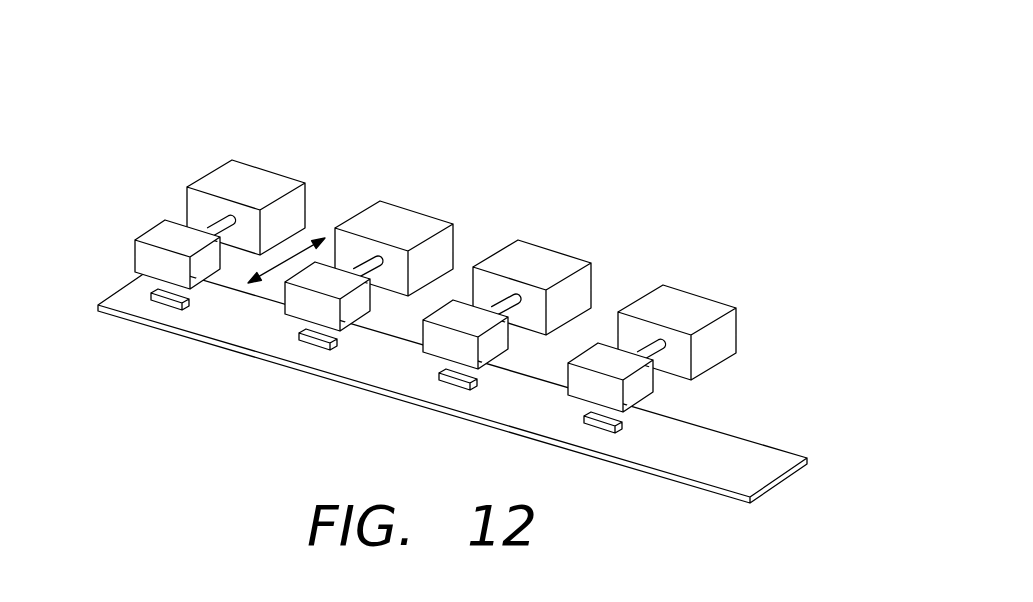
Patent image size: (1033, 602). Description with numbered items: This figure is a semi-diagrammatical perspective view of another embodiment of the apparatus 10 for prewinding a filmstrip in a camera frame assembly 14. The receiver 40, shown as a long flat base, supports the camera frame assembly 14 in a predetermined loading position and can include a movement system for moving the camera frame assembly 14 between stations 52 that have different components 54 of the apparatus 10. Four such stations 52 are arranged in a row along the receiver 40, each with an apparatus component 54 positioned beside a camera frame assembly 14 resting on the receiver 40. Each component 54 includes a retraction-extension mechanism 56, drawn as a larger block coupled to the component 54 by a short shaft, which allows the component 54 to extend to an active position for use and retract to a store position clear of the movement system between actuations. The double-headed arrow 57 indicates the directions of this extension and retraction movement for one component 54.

The apparatus 10 is at (653, 105).
The camera frame assembly 14 is at (300, 330).
The receiver 40 is at (713, 437).
The station 52 is at (238, 147).
The apparatus component 54 is at (147, 231).
The retraction-extension mechanism 56 is at (282, 173).
The double-headed arrow 57 is at (295, 256).